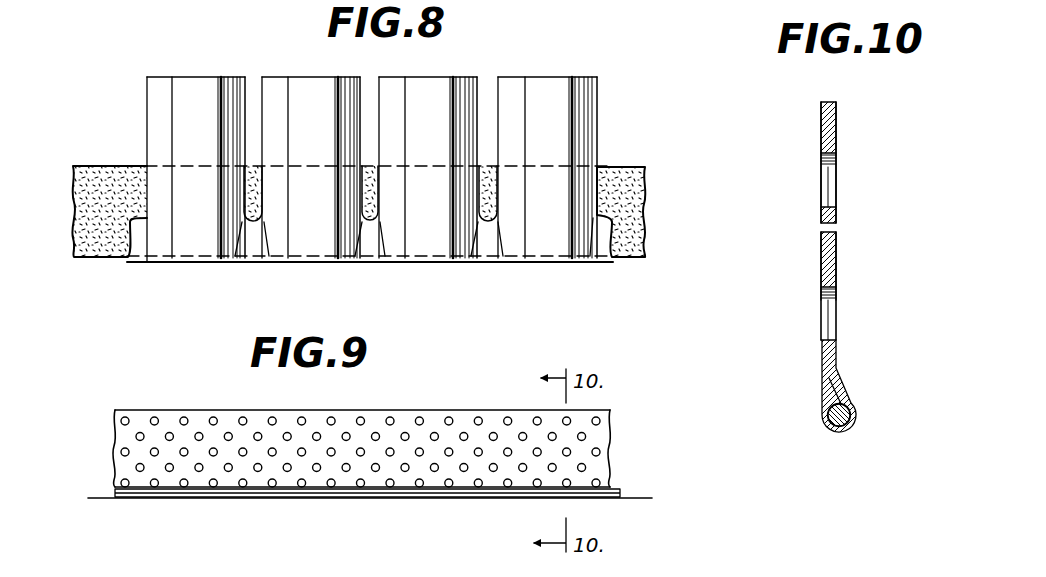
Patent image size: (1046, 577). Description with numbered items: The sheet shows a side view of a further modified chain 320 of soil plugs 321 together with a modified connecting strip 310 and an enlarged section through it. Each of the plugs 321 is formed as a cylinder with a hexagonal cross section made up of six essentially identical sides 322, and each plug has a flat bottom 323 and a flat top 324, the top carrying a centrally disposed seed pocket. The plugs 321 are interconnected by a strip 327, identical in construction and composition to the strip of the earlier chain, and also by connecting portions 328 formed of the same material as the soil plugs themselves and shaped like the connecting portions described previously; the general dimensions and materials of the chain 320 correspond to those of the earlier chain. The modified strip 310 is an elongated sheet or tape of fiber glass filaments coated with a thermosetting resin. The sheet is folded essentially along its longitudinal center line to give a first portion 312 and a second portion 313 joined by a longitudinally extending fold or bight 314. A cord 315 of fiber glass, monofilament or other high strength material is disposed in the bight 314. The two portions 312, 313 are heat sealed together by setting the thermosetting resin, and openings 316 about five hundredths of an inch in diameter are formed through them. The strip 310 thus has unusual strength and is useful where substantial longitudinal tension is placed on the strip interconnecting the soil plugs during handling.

In FIG. 8, the chain 320 is at (148, 54).
In FIG. 8, the soil plugs 321 is at (467, 75).
In FIG. 8, the sides 322 is at (343, 82).
In FIG. 8, the flat bottom 323 is at (193, 263).
In FIG. 8, the flat top 324 is at (188, 77).
In FIG. 8, the strip 327 is at (631, 190).
In FIG. 8, the connecting portions 328 is at (488, 242).
In FIG. 9, the strip 310 is at (386, 395).
In FIG. 10, the strip 310 is at (818, 258).
In FIG. 10, the first portion 312 is at (838, 125).
In FIG. 9, the second portion 313 is at (461, 418).
In FIG. 10, the second portion 313 is at (820, 137).
In FIG. 9, the bight 314 is at (450, 501).
In FIG. 10, the bight 314 is at (845, 431).
In FIG. 9, the cord 315 is at (639, 499).
In FIG. 10, the cord 315 is at (857, 406).
In FIG. 9, the openings 316 is at (184, 417).
In FIG. 10, the openings 316 is at (833, 185).